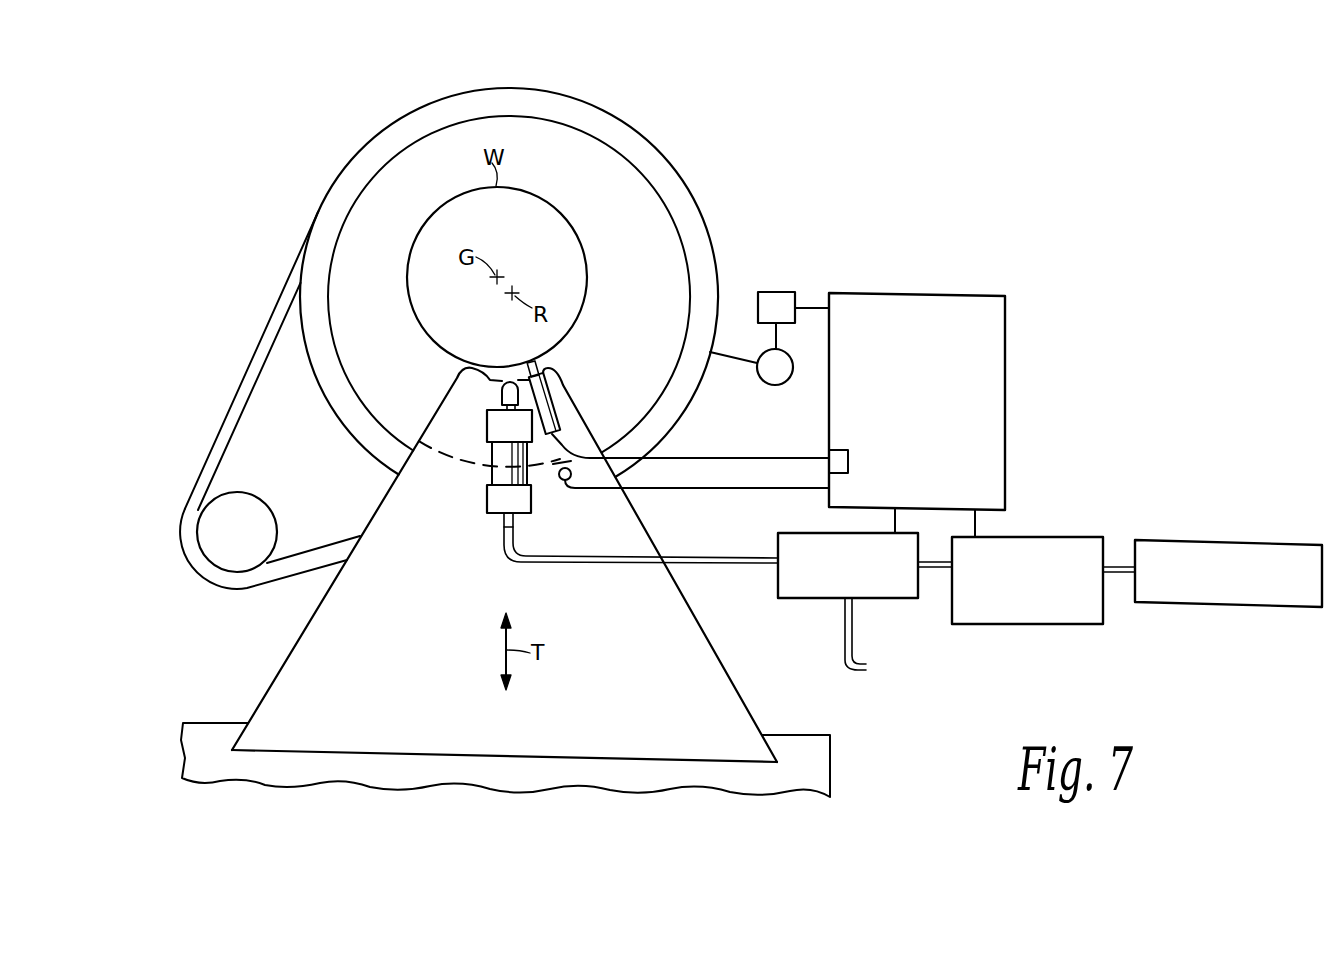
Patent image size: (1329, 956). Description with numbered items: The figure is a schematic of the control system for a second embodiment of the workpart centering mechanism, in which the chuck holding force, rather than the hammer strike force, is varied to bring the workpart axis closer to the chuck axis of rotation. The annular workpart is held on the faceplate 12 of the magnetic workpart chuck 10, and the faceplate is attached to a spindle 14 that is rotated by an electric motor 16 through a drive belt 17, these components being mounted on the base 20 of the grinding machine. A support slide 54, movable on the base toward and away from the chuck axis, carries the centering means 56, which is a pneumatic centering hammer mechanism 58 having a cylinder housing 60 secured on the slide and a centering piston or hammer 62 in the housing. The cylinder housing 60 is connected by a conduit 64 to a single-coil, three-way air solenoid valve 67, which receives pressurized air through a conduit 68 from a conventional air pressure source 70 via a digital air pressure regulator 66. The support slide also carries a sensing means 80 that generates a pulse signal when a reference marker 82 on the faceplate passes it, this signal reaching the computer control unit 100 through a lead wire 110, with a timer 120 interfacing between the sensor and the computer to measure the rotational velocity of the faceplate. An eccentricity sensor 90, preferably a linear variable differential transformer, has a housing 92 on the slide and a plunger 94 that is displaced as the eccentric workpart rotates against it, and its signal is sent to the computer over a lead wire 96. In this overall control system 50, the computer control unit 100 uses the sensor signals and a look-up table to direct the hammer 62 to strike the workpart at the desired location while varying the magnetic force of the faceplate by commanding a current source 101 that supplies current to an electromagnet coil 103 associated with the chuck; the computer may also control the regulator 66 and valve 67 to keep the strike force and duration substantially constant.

The magnetic workpart chuck 10 is at (657, 189).
The chuck faceplate 12 is at (665, 230).
The spindle 14 is at (398, 120).
The electric motor 16 is at (252, 508).
The drive belt 17 is at (262, 357).
The base 20 is at (785, 742).
The control system 50 is at (817, 261).
The support slide 54 is at (300, 640).
The centering means 56 is at (464, 492).
The pneumatic centering hammer mechanism 58 is at (471, 411).
The cylinder housing 60 is at (492, 473).
The centering piston or hammer 62 is at (496, 382).
The conduit 64 is at (604, 564).
The digital air pressure regulator 66 is at (1055, 538).
The air solenoid valve 67 is at (817, 598).
The conduit 68 is at (940, 575).
The air pressure source 70 is at (1173, 540).
The sensing means 80 is at (563, 492).
The reference marker 82 is at (642, 400).
The eccentricity sensor 90 is at (552, 382).
The housing 92 is at (552, 412).
The plunger 94 is at (540, 365).
The lead wire 96 is at (702, 458).
The computer control unit 100 is at (1000, 422).
The current source 101 is at (768, 292).
The electromagnet coil 103 is at (775, 385).
The lead wire 110 is at (680, 488).
The timer 120 is at (846, 452).